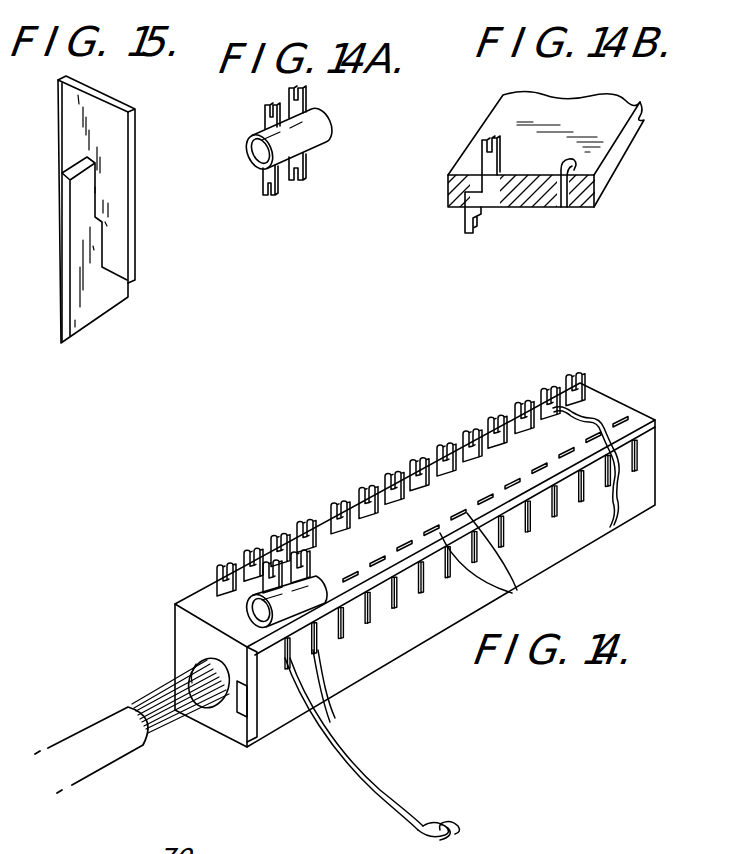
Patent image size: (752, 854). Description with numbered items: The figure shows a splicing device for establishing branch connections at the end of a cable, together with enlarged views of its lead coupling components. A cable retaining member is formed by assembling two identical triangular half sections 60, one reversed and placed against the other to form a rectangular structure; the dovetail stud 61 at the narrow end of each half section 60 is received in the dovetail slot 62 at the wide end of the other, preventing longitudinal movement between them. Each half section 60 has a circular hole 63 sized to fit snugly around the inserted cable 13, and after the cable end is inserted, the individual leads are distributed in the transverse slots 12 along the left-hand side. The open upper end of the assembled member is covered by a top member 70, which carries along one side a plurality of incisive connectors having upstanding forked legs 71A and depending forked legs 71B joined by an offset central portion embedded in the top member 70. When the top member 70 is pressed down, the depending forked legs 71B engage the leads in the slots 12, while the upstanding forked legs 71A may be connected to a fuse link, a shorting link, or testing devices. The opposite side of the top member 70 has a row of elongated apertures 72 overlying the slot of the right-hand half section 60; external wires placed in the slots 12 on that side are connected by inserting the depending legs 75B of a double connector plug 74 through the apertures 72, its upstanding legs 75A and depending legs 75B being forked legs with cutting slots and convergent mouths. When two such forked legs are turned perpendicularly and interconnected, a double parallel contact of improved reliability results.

In FIG. 14, the transverse slots 12 is at (393, 608).
In FIG. 14, the cable 13 is at (104, 714).
In FIG. 14, the half section 60 is at (175, 631).
In FIG. 14, the dovetail stud 61 is at (256, 697).
In FIG. 14, the dovetail slot 62 is at (235, 719).
In FIG. 14, the circular hole 63 is at (192, 668).
In FIG. 14B, the top member 70 is at (500, 102).
In FIG. 14, the top member 70 is at (607, 393).
In FIG. 14B, the upstanding forked legs 71A is at (480, 152).
In FIG. 14, the upstanding forked legs 71A is at (394, 470).
In FIG. 14B, the depending forked legs 71B is at (463, 228).
In FIG. 14B, the elongated apertures 72 is at (559, 207).
In FIG. 14, the elongated apertures 72 is at (452, 623).
In FIG. 14A, the double connector plug 74 is at (314, 128).
In FIG. 14, the double connector plug 74 is at (247, 607).
In FIG. 14A, the upstanding legs 75A is at (294, 86).
In FIG. 14, the upstanding legs 75A is at (262, 575).
In FIG. 14A, the depending legs 75B is at (280, 183).